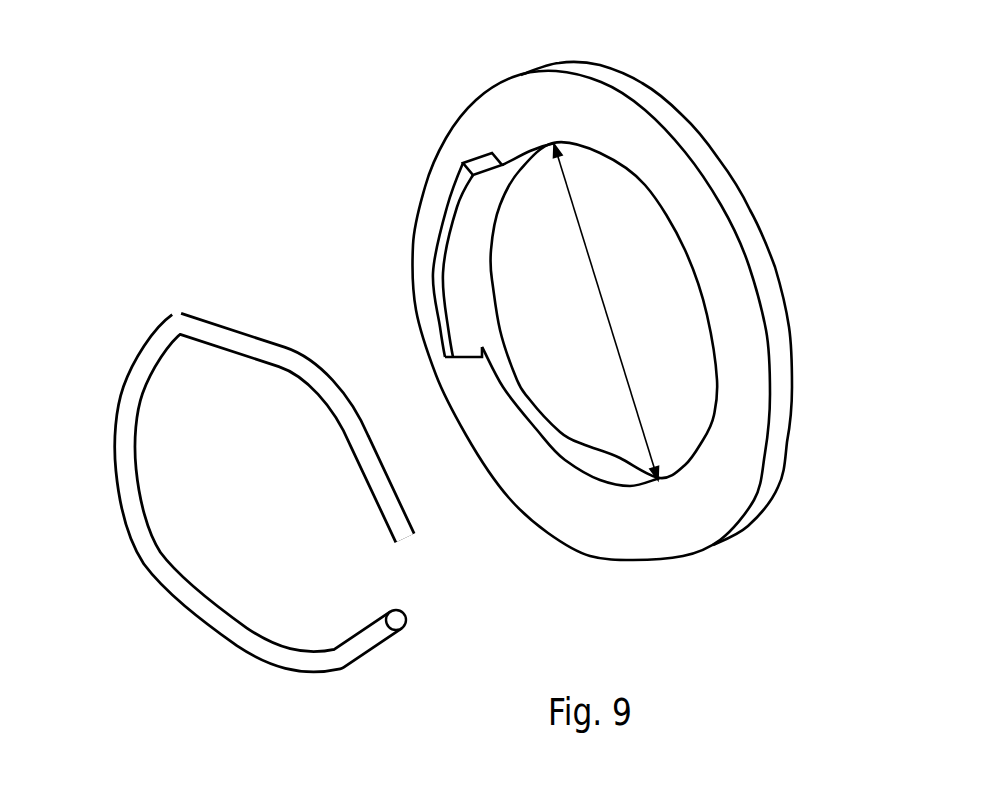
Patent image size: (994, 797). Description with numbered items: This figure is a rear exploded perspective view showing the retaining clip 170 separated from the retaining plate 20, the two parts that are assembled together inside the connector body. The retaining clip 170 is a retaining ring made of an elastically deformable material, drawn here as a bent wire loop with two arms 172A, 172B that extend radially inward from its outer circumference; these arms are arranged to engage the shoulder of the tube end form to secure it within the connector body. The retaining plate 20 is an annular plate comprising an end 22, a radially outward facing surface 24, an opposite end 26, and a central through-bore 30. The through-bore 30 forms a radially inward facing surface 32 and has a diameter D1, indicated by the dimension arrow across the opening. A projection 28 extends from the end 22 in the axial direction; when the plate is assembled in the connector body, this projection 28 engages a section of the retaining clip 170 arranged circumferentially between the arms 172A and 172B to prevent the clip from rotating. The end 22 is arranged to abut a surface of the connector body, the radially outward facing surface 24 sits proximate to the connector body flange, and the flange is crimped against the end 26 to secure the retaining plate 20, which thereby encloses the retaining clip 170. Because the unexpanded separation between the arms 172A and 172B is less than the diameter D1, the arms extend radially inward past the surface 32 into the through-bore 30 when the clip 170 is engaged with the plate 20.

The retaining plate 20 is at (627, 328).
The end 22 is at (627, 280).
The radially outward facing surface 24 is at (722, 187).
The end 26 is at (773, 248).
The projection 28 is at (463, 205).
The through-bore 30 is at (543, 318).
The radially inward facing surface 32 is at (517, 380).
The diameter D1 is at (615, 330).
The retaining clip 170 is at (223, 405).
The arm 172A is at (195, 595).
The arm 172B is at (223, 333).